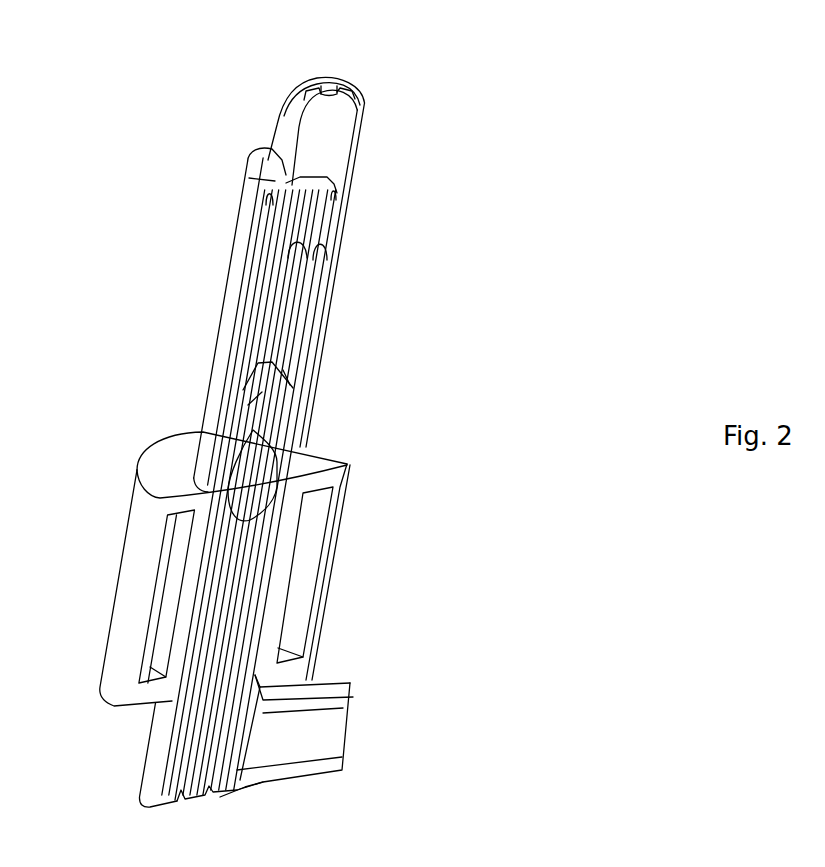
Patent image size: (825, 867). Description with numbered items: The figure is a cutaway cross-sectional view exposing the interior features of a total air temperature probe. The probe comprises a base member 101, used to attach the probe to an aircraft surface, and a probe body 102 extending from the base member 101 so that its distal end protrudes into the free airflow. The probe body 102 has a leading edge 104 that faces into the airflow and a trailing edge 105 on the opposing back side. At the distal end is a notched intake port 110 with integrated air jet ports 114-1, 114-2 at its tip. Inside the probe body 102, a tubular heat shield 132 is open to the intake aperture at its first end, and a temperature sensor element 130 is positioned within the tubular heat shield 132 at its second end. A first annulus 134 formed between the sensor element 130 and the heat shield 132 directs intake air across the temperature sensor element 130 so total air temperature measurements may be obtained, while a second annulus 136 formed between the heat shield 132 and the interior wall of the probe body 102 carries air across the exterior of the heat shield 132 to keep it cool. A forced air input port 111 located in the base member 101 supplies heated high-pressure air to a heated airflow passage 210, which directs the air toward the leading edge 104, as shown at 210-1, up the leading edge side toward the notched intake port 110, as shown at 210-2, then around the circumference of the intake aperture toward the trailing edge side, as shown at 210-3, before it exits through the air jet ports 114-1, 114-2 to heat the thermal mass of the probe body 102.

The base member 101 is at (122, 554).
The probe body 102 is at (213, 372).
The leading edge 104 is at (222, 412).
The trailing edge 105 is at (318, 417).
The notched intake port 110 is at (392, 119).
The forced air input port 111 is at (352, 684).
The air jet port 114-1 is at (303, 92).
The air jet port 114-2 is at (362, 97).
The temperature sensor element 130 is at (290, 258).
The tubular heat shield 132 is at (318, 200).
The first annulus 134 is at (304, 203).
The second annulus 136 is at (284, 176).
The heated airflow passage 210 is at (270, 742).
The heated airflow passage portion toward leading edge 210-1 is at (180, 743).
The heated airflow passage portion toward notched intake port 210-2 is at (260, 272).
The heated airflow passage portion around intake aperture 210-3 is at (332, 242).